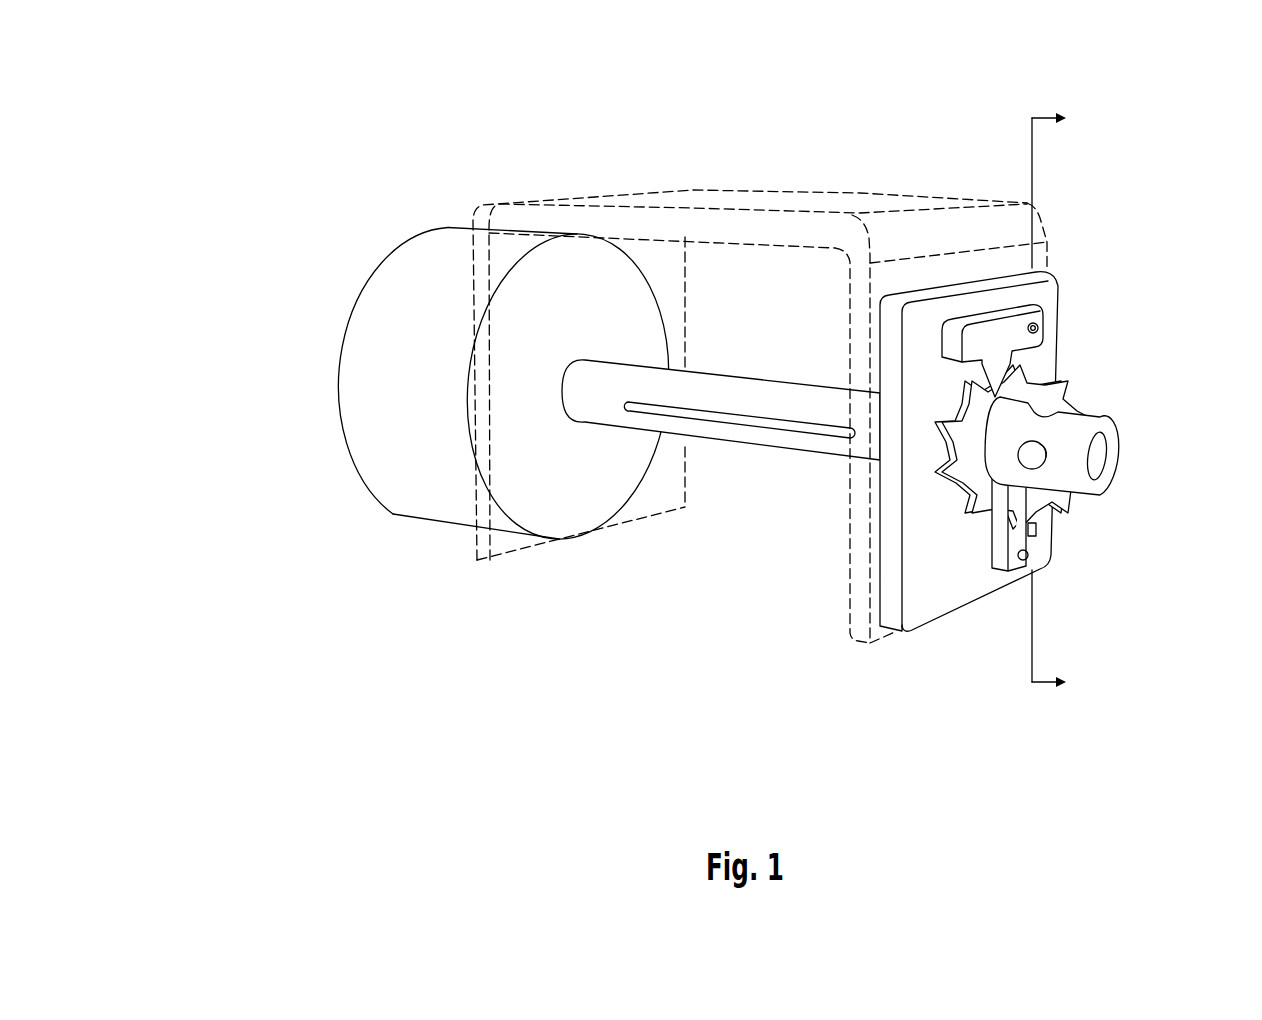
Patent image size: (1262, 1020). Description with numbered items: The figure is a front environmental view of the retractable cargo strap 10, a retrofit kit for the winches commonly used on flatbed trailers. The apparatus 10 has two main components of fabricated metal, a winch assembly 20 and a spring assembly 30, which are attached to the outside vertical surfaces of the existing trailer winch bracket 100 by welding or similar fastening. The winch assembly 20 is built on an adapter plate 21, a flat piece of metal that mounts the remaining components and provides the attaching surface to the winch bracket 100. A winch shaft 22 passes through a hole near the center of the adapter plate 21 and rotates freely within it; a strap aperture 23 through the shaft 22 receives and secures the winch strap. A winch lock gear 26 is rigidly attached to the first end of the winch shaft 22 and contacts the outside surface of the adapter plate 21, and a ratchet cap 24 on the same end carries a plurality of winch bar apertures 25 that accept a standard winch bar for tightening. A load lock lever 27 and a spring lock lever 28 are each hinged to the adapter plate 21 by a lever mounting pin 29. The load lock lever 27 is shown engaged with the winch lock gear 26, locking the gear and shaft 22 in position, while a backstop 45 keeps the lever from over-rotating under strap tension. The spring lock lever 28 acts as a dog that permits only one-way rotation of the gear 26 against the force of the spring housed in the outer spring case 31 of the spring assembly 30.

The retractable cargo strap 10 is at (246, 130).
The winch assembly 20 is at (1032, 466).
The adapter plate 21 is at (1045, 282).
The winch shaft 22 is at (721, 407).
The strap aperture 23 is at (735, 410).
The ratchet cap 24 is at (1117, 460).
The winch bar apertures 25 is at (1109, 459).
The winch lock gear 26 is at (1010, 385).
The load lock lever 27 is at (998, 560).
The spring lock lever 28 is at (1037, 343).
The lever mounting pin 29 is at (1040, 330).
The spring assembly 30 is at (510, 398).
The outer spring case 31 is at (446, 478).
The backstop 45 is at (1036, 532).
The trailer winch bracket 100 is at (792, 197).